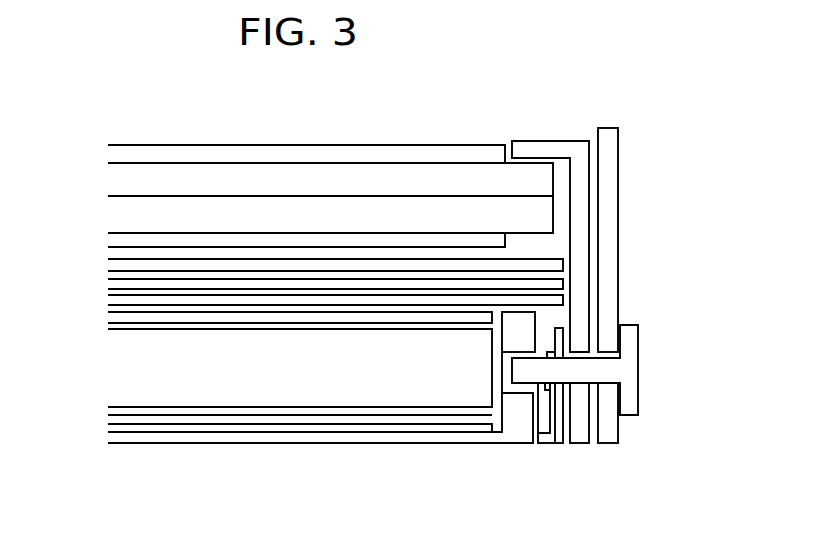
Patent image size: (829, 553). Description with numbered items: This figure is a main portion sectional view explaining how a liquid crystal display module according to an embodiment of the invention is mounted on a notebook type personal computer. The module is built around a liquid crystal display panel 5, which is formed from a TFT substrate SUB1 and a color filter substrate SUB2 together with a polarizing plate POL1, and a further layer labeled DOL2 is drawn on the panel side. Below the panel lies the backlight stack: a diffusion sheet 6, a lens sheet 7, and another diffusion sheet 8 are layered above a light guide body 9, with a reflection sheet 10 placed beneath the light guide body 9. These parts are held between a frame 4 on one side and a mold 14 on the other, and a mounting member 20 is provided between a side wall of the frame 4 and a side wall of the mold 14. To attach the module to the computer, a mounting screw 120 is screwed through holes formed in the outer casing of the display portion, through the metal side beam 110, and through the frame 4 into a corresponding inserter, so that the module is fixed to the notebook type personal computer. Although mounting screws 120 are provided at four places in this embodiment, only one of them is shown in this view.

The frame 4 is at (548, 148).
The liquid crystal display panel 5 is at (90, 145).
The diffusion sheet 6 is at (108, 267).
The lens sheet 7 is at (108, 297).
The diffusion sheet 8 is at (108, 317).
The light guide body 9 is at (118, 366).
The reflection sheet 10 is at (106, 414).
The mold 14 is at (435, 443).
The mounting member 20 is at (548, 443).
The metal side beam 110 is at (612, 277).
The mounting screw 120 is at (628, 367).
The second dielectric layer DOL2 is at (204, 147).
The color filter substrate SUB2 is at (283, 177).
The TFT substrate SUB1 is at (378, 205).
The polarizing plate POL1 is at (440, 240).